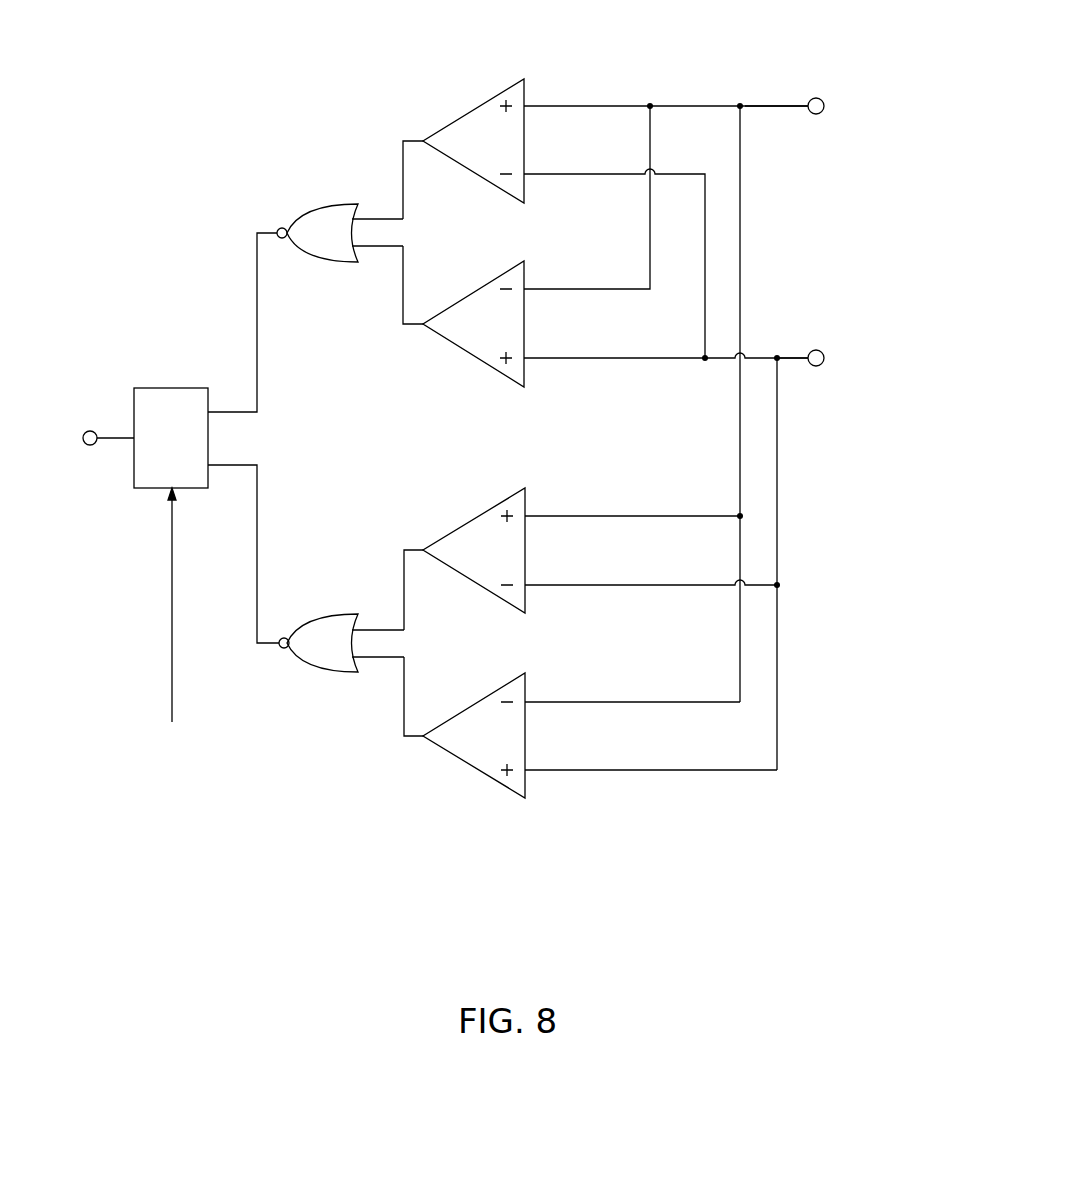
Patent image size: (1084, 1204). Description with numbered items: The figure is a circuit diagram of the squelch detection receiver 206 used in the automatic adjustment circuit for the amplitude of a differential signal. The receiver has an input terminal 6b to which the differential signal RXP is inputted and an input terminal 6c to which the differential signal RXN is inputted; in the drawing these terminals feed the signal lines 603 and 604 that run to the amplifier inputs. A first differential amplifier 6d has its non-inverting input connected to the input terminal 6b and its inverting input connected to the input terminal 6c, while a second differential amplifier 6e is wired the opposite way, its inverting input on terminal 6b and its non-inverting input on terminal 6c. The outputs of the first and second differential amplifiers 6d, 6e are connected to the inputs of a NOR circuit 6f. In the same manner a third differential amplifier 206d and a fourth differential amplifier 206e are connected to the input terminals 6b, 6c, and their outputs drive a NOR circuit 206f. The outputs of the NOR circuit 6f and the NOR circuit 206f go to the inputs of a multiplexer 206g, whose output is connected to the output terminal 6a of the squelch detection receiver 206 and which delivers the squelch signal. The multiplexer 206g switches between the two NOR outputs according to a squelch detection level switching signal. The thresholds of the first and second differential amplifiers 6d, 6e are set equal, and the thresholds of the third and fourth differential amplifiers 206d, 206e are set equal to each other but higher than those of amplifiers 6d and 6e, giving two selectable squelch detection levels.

The squelch detection receiver 206 is at (745, 882).
The multiplexer 206g is at (205, 388).
The output terminal 6a is at (90, 446).
The NOR circuit 6f is at (327, 205).
The NOR circuit 206f is at (327, 615).
The first differential amplifier 6d is at (456, 120).
The second differential amplifier 6e is at (455, 305).
The third differential amplifier 206d is at (456, 530).
The fourth differential amplifier 206e is at (456, 712).
The input terminal 6b is at (816, 97).
The input terminal 6c is at (816, 349).
The RXP signal line 603 is at (768, 108).
The RXN signal line 604 is at (793, 361).